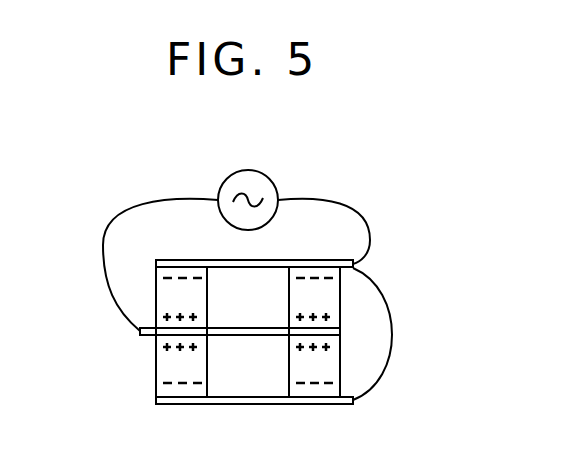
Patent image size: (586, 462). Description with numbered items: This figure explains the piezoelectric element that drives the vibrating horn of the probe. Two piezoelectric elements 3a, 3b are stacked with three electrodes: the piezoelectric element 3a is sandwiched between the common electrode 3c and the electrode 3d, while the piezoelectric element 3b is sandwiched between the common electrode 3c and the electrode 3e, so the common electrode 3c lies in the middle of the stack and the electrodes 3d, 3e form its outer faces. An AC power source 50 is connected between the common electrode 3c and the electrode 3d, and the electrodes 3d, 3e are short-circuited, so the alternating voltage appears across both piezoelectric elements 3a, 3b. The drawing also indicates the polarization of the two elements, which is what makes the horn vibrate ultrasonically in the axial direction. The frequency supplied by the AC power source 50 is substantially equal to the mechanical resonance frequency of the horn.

The piezoelectric element 3a is at (157, 288).
The piezoelectric element 3b is at (157, 360).
The common electrode 3c is at (340, 334).
The electrode 3d is at (338, 265).
The electrode 3e is at (330, 405).
The AC power source 50 is at (223, 182).